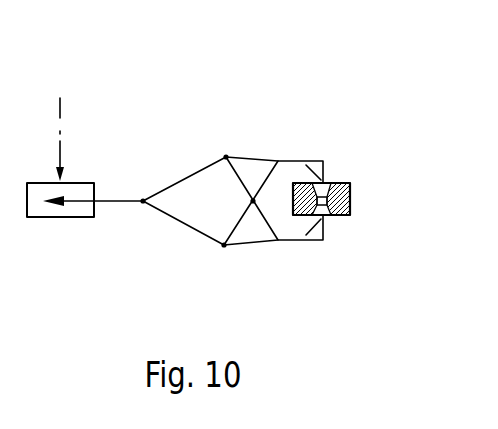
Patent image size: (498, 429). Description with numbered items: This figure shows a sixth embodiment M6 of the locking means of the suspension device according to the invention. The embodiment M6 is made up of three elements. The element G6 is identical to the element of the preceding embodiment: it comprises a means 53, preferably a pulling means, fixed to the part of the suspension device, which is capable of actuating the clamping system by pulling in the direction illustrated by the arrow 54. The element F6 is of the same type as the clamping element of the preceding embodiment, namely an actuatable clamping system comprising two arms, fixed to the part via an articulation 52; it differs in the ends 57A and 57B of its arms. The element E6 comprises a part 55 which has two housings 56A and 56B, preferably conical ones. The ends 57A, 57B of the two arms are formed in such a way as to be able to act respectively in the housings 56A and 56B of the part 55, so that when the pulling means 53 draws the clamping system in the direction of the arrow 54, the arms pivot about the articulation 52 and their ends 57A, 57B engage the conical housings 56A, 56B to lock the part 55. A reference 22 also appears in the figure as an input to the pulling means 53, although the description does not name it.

The control signal input 22 is at (61, 112).
The articulation 52 is at (252, 199).
The means 53 is at (78, 218).
The arrow 54 is at (80, 200).
The part 55 is at (353, 204).
The housing 56A is at (335, 178).
The housing 56B is at (332, 220).
The end of arm 57A is at (331, 179).
The end of arm 57B is at (315, 243).
The element E6 is at (368, 200).
The element F6 is at (178, 248).
The element G6 is at (46, 236).
The sixth embodiment of the locking means M6 is at (198, 130).